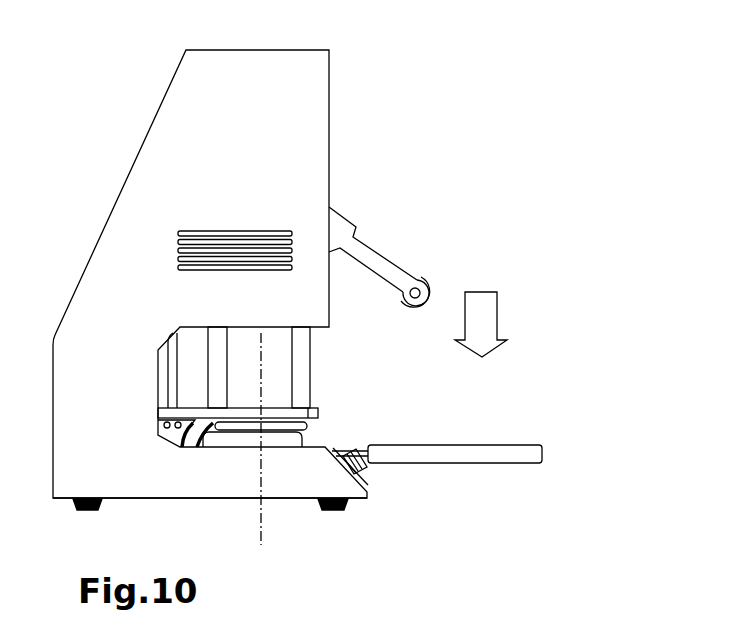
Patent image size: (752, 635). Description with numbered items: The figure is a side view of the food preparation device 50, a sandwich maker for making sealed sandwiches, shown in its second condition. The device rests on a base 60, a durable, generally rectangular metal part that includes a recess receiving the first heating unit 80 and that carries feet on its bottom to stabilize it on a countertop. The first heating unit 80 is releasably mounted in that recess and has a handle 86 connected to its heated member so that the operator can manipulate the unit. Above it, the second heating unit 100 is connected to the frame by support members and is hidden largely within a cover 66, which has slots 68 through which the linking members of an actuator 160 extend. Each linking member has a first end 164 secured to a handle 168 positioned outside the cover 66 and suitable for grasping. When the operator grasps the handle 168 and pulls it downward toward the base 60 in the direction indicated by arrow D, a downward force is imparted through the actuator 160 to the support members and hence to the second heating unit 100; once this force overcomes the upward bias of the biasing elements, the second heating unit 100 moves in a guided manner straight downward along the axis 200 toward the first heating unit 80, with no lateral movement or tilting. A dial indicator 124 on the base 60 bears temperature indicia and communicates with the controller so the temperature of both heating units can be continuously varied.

The food preparation device 50 is at (393, 100).
The cover 66 is at (234, 93).
The slots 68 is at (188, 242).
The base 60 is at (160, 473).
The actuator 160 is at (421, 260).
The first end 164 is at (388, 268).
The handle 168 is at (432, 293).
The arrow D is at (483, 317).
The axis 200 is at (255, 535).
The second heating unit 100 is at (323, 403).
The first heating unit 80 is at (309, 433).
The handle 86 is at (477, 455).
The dial indicator 124 is at (363, 473).